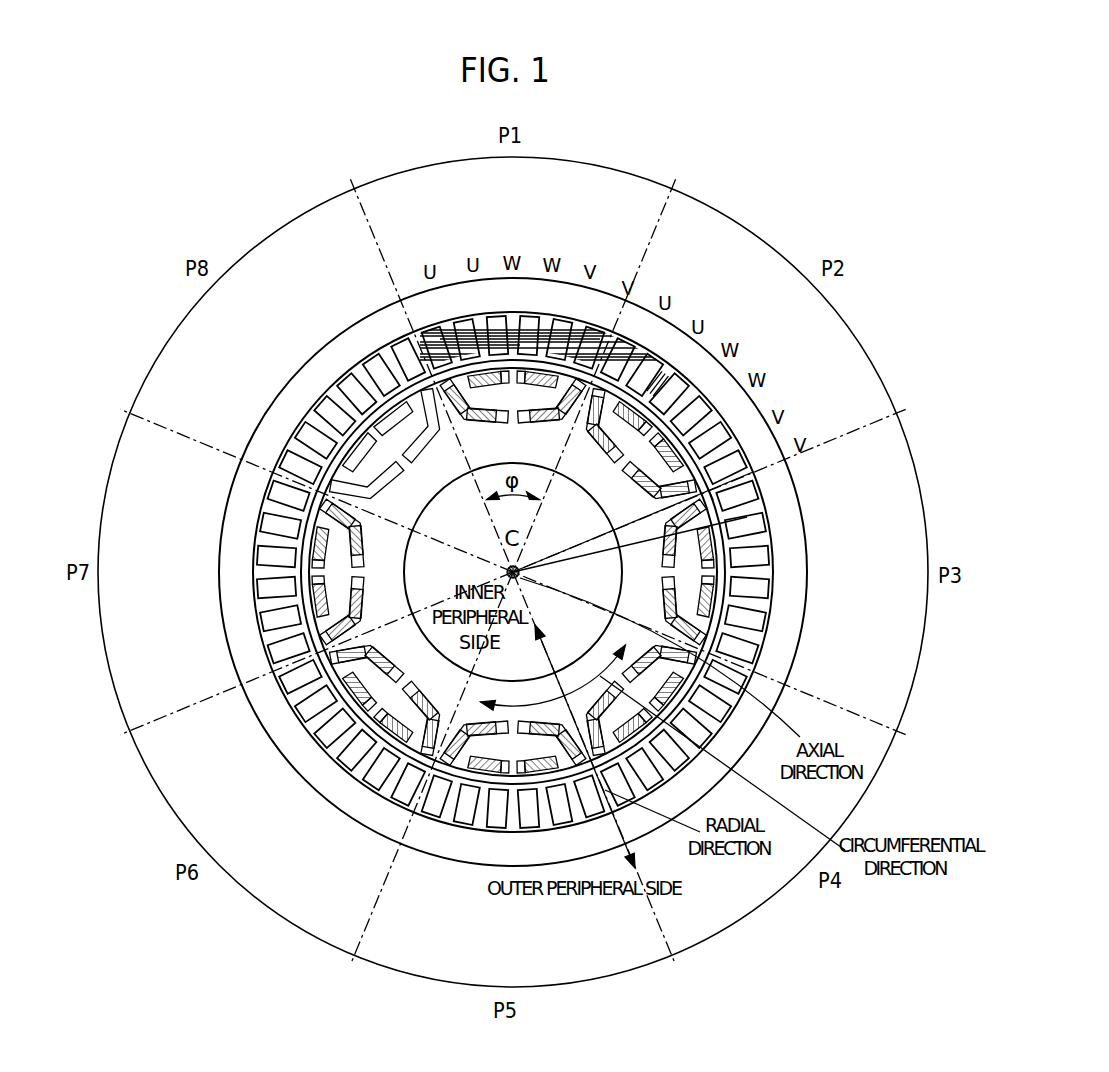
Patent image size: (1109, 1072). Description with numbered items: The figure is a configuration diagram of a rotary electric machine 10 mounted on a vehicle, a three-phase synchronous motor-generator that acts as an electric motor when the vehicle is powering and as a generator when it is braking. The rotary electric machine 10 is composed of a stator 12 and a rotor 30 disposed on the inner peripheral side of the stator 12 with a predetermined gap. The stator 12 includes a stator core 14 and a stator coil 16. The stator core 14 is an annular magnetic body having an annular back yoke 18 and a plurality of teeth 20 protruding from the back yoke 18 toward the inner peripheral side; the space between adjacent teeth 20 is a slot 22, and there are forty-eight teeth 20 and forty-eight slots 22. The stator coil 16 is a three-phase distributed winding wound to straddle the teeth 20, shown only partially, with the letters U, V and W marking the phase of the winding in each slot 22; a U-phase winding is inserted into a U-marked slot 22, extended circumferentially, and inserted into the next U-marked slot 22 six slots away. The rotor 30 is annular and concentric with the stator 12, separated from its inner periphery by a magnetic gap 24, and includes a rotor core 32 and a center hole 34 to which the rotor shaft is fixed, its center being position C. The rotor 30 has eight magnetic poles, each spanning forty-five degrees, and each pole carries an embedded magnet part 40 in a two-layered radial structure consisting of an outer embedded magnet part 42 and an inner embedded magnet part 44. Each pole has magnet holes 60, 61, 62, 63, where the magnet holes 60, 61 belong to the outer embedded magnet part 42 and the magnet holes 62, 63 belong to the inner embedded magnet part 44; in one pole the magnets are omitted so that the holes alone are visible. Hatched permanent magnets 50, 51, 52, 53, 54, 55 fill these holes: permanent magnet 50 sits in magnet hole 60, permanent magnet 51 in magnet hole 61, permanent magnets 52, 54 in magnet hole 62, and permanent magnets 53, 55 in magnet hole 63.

The rotary electric machine 10 is at (210, 932).
The stator 12 is at (797, 292).
The stator core 14 is at (723, 280).
The stator coil 16 is at (632, 340).
The back yoke 18 is at (718, 378).
The teeth 20 is at (680, 380).
The slot 22 is at (673, 367).
The magnetic gap 24 is at (745, 490).
The rotor 30 is at (640, 570).
The rotor core 32 is at (705, 640).
The center hole 34 is at (720, 572).
The embedded magnet part 40 is at (483, 214).
The outer embedded magnet part 42 is at (447, 335).
The inner embedded magnet part 44 is at (423, 345).
The permanent magnet 50 is at (307, 590).
The permanent magnet 51 is at (307, 540).
The permanent magnet 52 is at (345, 623).
The permanent magnet 53 is at (345, 527).
The permanent magnet 54 is at (327, 650).
The permanent magnet 55 is at (330, 497).
The magnet hole 60 is at (347, 450).
The magnet hole 61 is at (382, 415).
The magnet hole 62 is at (323, 478).
The magnet hole 63 is at (413, 400).